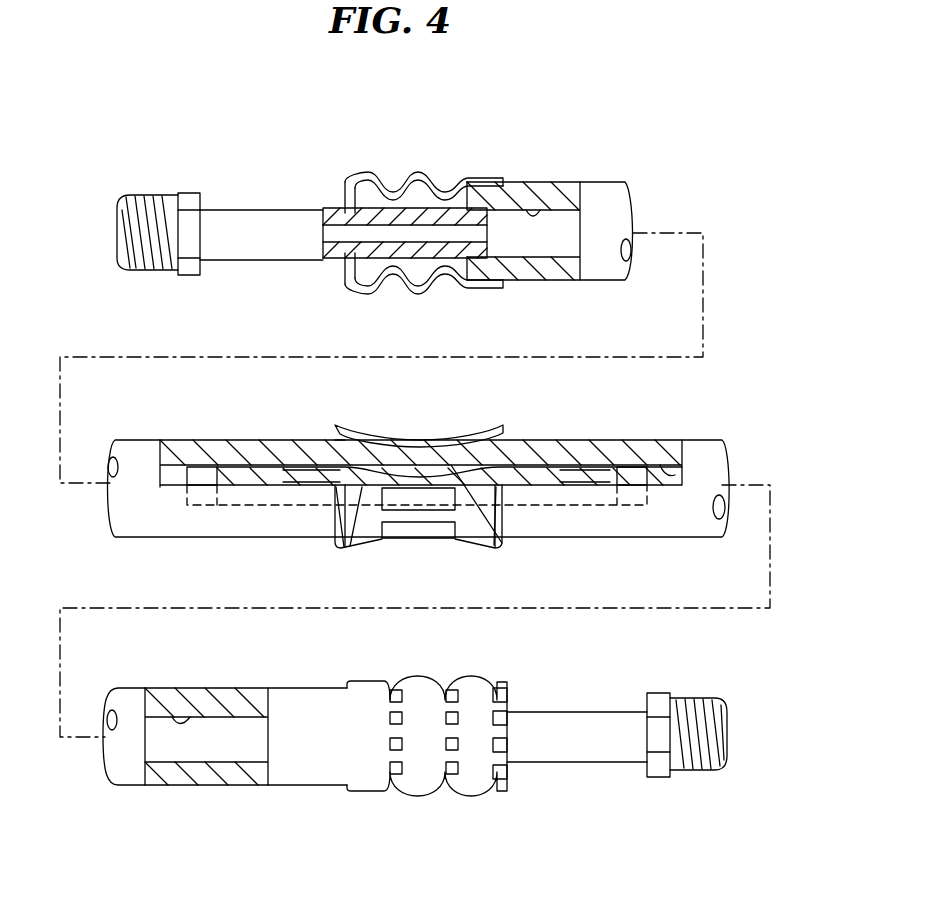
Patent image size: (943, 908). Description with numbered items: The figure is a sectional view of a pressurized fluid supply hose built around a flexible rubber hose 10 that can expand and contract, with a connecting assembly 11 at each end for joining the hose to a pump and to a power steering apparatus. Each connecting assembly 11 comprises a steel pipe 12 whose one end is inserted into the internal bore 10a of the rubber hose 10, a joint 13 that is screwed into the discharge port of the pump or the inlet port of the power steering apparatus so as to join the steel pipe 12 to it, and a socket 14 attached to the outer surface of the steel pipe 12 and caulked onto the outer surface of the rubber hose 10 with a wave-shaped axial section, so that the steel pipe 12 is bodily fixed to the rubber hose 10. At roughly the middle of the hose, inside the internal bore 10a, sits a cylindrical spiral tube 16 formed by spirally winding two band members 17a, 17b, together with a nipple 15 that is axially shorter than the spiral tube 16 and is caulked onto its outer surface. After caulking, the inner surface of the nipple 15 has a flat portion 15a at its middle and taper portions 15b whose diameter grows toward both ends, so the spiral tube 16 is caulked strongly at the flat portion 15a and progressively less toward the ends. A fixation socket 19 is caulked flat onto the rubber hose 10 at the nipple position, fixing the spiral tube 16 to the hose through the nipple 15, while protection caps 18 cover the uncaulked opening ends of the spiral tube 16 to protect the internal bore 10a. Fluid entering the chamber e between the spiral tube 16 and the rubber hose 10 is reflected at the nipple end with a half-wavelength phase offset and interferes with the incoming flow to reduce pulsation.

The rubber hose 10 is at (597, 182).
The internal bore 10a is at (533, 212).
The connecting assembly 11 is at (189, 190).
The steel pipe 12 is at (237, 208).
The joint 13 is at (133, 197).
The socket 14 is at (363, 173).
The nipple 15 is at (458, 488).
The flat portion 15a is at (432, 543).
The taper portion 15b is at (372, 487).
The spiral tube 16 is at (583, 476).
The band member 17a is at (285, 474).
The band member 17b is at (257, 474).
The protection cap 18 is at (193, 470).
The fixation socket 19 is at (492, 430).
The chamber e is at (336, 440).